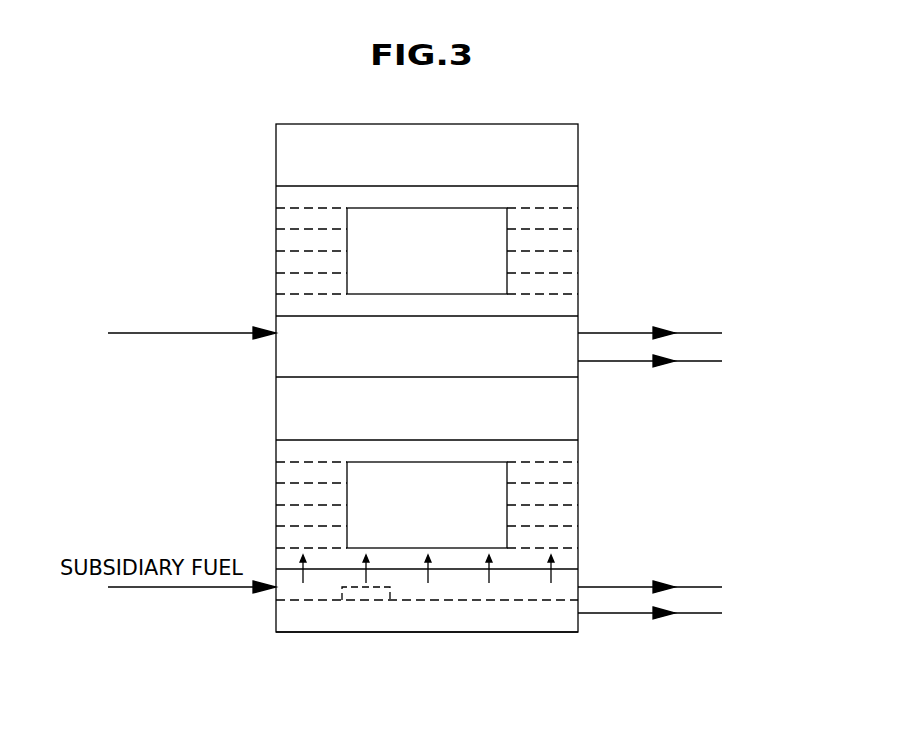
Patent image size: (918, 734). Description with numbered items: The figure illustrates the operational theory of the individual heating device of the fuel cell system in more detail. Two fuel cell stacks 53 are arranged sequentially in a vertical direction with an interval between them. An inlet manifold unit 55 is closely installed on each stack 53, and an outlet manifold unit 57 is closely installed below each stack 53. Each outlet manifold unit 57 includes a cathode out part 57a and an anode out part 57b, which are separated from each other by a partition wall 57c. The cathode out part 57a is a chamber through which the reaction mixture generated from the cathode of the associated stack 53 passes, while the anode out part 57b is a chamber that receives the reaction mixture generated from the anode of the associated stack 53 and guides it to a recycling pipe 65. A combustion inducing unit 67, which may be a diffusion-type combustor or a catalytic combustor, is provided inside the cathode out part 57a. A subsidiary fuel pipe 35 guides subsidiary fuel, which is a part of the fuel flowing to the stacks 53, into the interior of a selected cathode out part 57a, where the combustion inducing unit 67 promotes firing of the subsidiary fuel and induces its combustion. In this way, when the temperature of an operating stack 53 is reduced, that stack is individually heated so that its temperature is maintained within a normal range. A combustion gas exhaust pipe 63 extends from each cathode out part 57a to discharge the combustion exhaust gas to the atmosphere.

The subsidiary fuel pipe 35 is at (130, 333).
The fuel cell stack 53 is at (590, 225).
The inlet manifold unit 55 is at (557, 160).
The outlet manifold unit 57 is at (535, 330).
The cathode out part 57a is at (455, 585).
The anode out part 57b is at (523, 620).
The partition wall 57c is at (313, 601).
The combustion gas exhaust pipe 63 is at (705, 333).
The recycling pipe 65 is at (705, 361).
The combustion inducing unit 67 is at (375, 588).